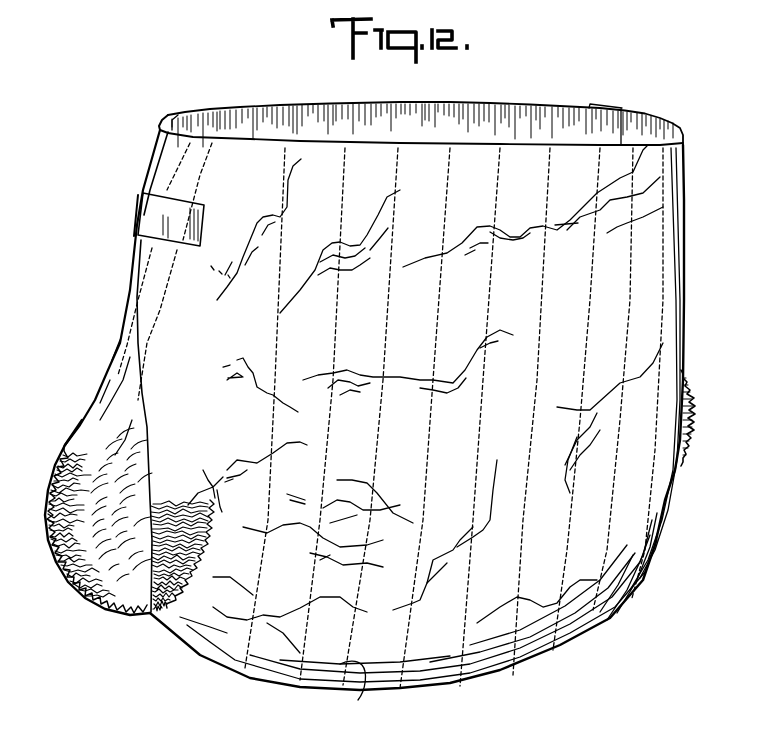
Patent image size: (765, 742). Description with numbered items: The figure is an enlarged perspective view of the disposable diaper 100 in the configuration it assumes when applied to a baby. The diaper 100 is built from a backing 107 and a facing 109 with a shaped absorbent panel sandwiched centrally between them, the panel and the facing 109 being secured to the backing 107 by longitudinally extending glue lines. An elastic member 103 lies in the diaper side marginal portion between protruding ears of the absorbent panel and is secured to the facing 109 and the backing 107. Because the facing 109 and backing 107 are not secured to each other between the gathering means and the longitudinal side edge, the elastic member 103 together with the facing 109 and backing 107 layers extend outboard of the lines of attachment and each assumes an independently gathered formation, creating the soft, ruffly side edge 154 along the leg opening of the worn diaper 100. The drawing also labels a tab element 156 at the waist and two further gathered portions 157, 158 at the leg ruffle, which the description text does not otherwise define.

The disposable diaper 100 is at (527, 68).
The elastic member 103 is at (254, 139).
The fastening tab 156 is at (139, 219).
The backing 107 is at (688, 383).
The facing 109 is at (63, 550).
The gathered ruffle edge 158 is at (68, 572).
The inner elastic ruffle 157 is at (78, 596).
The ruffly side edge 154 is at (443, 652).